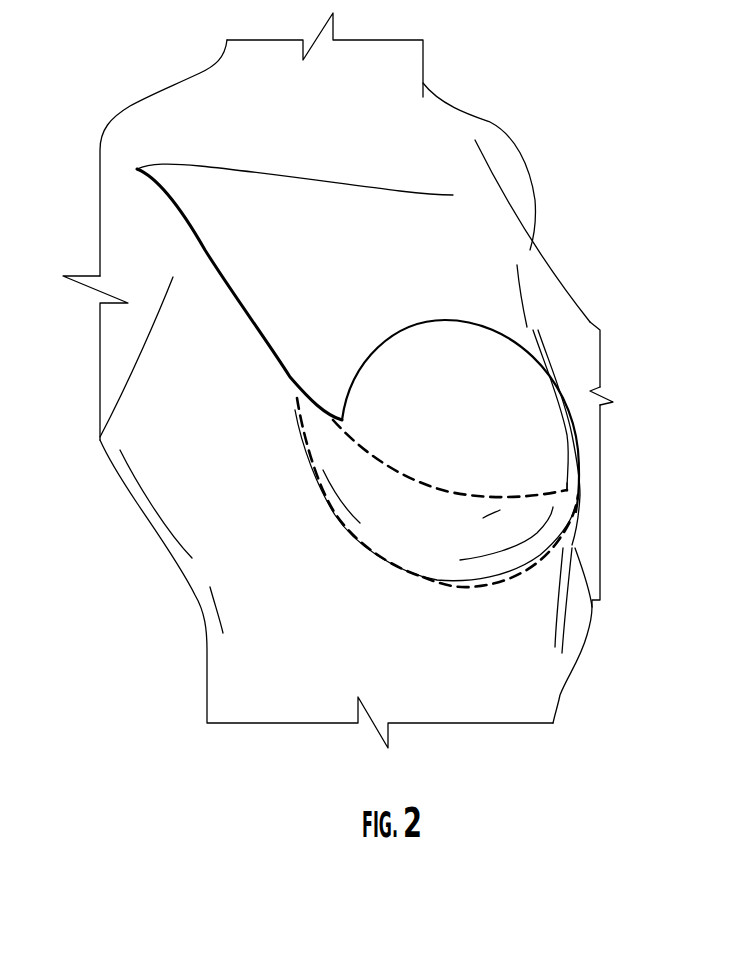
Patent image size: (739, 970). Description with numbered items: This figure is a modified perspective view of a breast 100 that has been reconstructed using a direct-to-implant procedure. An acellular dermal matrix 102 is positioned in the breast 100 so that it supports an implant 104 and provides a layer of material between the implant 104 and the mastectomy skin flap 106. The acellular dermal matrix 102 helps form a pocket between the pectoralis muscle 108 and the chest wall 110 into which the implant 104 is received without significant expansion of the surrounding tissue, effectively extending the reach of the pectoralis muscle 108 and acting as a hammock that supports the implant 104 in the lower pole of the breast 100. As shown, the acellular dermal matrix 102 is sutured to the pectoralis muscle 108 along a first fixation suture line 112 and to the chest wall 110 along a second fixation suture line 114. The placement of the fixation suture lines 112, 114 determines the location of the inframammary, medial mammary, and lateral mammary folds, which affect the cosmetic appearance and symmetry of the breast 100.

The breast 100 is at (556, 340).
The acellular dermal matrix 102 is at (500, 563).
The implant 104 is at (357, 377).
The mastectomy skin flap 106 is at (525, 328).
The pectoralis muscle 108 is at (190, 226).
The chest wall 110 is at (317, 493).
The first fixation suture line 112 is at (521, 500).
The second fixation suture line 114 is at (375, 545).